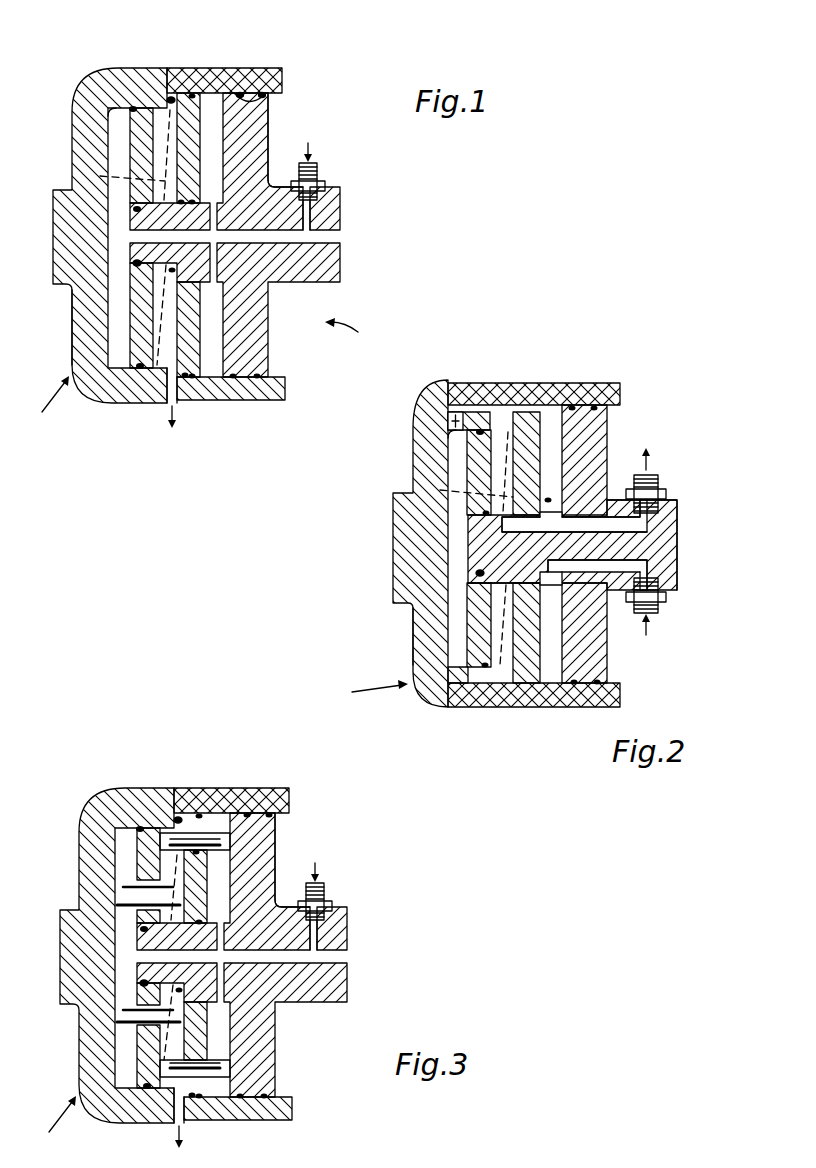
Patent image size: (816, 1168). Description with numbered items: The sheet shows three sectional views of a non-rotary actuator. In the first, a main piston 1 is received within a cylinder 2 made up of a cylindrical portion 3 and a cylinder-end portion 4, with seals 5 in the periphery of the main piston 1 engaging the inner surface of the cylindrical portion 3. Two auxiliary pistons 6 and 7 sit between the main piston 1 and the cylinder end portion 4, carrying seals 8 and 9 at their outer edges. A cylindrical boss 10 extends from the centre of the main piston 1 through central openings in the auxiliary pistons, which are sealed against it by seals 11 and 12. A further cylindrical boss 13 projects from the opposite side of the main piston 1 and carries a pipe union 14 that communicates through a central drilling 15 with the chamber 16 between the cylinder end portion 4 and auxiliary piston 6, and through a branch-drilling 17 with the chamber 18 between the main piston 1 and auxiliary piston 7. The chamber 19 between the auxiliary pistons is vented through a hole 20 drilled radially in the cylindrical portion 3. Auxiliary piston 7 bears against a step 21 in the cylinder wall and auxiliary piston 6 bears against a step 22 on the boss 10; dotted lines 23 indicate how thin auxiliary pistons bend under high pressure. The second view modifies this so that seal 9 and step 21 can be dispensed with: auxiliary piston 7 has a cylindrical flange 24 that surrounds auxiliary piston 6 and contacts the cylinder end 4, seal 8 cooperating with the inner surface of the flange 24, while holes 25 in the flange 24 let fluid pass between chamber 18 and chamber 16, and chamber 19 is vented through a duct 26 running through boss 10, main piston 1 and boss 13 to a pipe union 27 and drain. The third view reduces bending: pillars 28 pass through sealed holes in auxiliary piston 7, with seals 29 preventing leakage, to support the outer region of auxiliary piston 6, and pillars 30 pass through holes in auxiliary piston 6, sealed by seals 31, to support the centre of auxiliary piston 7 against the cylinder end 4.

In FIG. 1, the main piston 1 is at (347, 331).
In FIG. 2, the main piston 1 is at (607, 430).
In FIG. 3, the main piston 1 is at (283, 959).
In FIG. 1, the cylinder 2 is at (46, 408).
In FIG. 2, the cylinder 2 is at (371, 696).
In FIG. 3, the cylinder 2 is at (58, 1120).
In FIG. 1, the cylindrical portion 3 is at (200, 75).
In FIG. 2, the cylindrical portion 3 is at (520, 384).
In FIG. 3, the cylindrical portion 3 is at (236, 779).
In FIG. 1, the cylinder-end portion 4 is at (72, 135).
In FIG. 2, the cylinder-end portion 4 is at (413, 440).
In FIG. 3, the cylinder-end portion 4 is at (102, 955).
In FIG. 1, the seals 5 is at (262, 97).
In FIG. 1, the auxiliary piston 6 is at (140, 145).
In FIG. 2, the auxiliary piston 6 is at (478, 460).
In FIG. 3, the auxiliary piston 6 is at (102, 875).
In FIG. 1, the auxiliary piston 7 is at (167, 112).
In FIG. 2, the auxiliary piston 7 is at (522, 660).
In FIG. 3, the auxiliary piston 7 is at (110, 973).
In FIG. 1, the seal 8 is at (108, 108).
In FIG. 2, the seal 8 is at (448, 430).
In FIG. 1, the seal 9 is at (212, 117).
In FIG. 3, the seal 9 is at (201, 903).
In FIG. 1, the cylindrical boss 10 is at (212, 263).
In FIG. 2, the cylindrical boss 10 is at (530, 563).
In FIG. 1, the seal 11 is at (130, 205).
In FIG. 3, the seal 11 is at (119, 938).
In FIG. 1, the seal 12 is at (210, 300).
In FIG. 3, the seal 12 is at (249, 1052).
In FIG. 1, the cylindrical boss 13 is at (330, 262).
In FIG. 2, the cylindrical boss 13 is at (677, 520).
In FIG. 3, the cylindrical boss 13 is at (358, 944).
In FIG. 1, the pipe union 14 is at (318, 175).
In FIG. 2, the pipe union 14 is at (658, 602).
In FIG. 3, the pipe union 14 is at (335, 884).
In FIG. 1, the central drilling 15 is at (300, 236).
In FIG. 2, the central drilling 15 is at (615, 580).
In FIG. 3, the central drilling 15 is at (352, 938).
In FIG. 1, the chamber 16 is at (120, 310).
In FIG. 2, the chamber 16 is at (455, 615).
In FIG. 1, the branch-drilling 17 is at (250, 172).
In FIG. 3, the branch-drilling 17 is at (288, 860).
In FIG. 1, the chamber 18 is at (268, 125).
In FIG. 2, the chamber 18 is at (550, 430).
In FIG. 3, the chamber 18 is at (277, 874).
In FIG. 1, the chamber 19 is at (165, 330).
In FIG. 2, the chamber 19 is at (505, 630).
In FIG. 3, the chamber 19 is at (148, 1035).
In FIG. 1, the hole 20 is at (168, 390).
In FIG. 1, the step 21 is at (172, 98).
In FIG. 3, the step 21 is at (178, 784).
In FIG. 1, the step 22 is at (135, 262).
In FIG. 2, the step 22 is at (478, 572).
In FIG. 3, the step 22 is at (119, 979).
In FIG. 1, the dotted lines 23 is at (100, 176).
In FIG. 2, the dotted lines 23 is at (440, 490).
In FIG. 2, the cylindrical flange 24 is at (500, 690).
In FIG. 2, the holes 25 is at (456, 420).
In FIG. 2, the duct 26 is at (600, 515).
In FIG. 2, the pipe union 27 is at (660, 487).
In FIG. 3, the pillars 28 is at (224, 914).
In FIG. 3, the seals 29 is at (246, 904).
In FIG. 3, the pillars 30 is at (101, 977).
In FIG. 3, the seals 31 is at (99, 950).